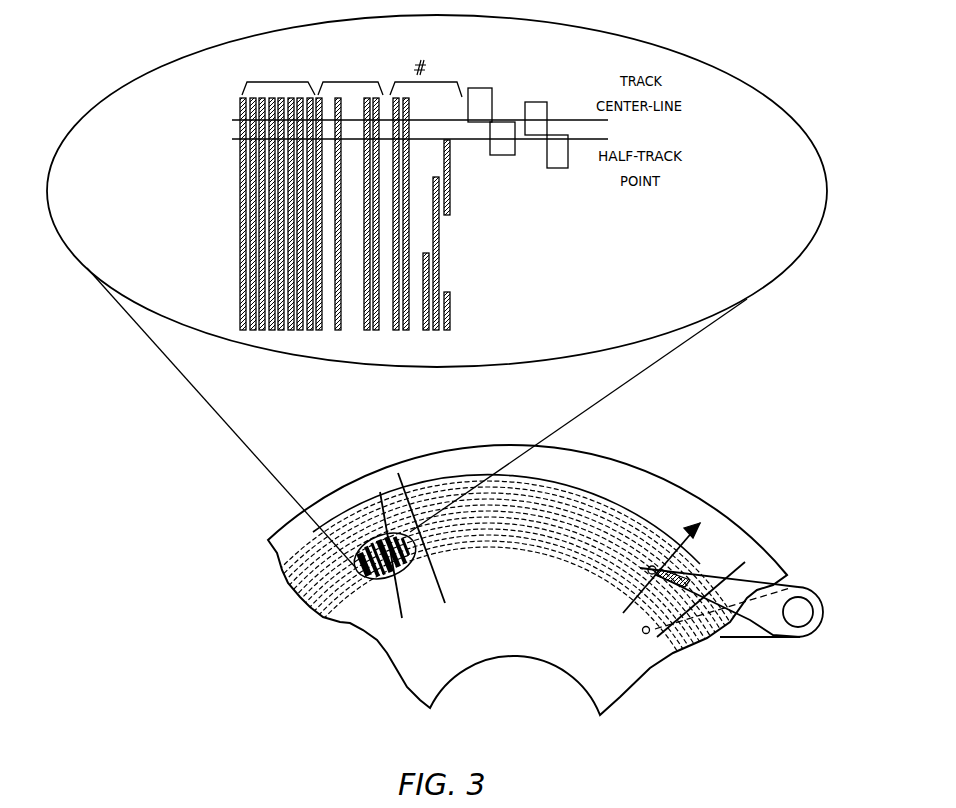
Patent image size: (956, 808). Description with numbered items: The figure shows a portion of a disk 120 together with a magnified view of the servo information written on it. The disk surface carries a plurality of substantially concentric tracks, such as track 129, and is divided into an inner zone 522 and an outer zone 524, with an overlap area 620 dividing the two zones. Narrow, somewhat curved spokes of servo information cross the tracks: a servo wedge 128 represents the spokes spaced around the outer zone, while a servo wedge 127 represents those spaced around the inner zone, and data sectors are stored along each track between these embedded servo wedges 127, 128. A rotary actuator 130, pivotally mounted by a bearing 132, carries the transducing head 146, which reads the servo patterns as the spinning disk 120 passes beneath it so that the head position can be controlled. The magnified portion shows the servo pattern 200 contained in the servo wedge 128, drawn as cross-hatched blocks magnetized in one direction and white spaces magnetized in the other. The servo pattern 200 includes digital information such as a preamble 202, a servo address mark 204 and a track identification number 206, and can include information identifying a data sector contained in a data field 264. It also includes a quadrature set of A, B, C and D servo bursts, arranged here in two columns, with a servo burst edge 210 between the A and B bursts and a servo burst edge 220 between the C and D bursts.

The servo pattern 200 is at (667, 50).
The preamble 202 is at (240, 93).
The servo address mark (SAM) 204 is at (365, 82).
The track identification number 206 is at (446, 82).
The servo burst edge 210 is at (492, 121).
The servo burst edge 220 is at (548, 136).
The disk 120 is at (272, 541).
The data field 264 is at (465, 478).
The servo wedge 128 is at (438, 582).
The track 129 is at (592, 498).
The transducing head 146 is at (652, 565).
The outer zone 524 is at (682, 496).
The servo wedge 127 is at (717, 537).
The bearing 132 is at (803, 596).
The rotary actuator 130 is at (742, 627).
The overlap area 620 is at (763, 637).
The inner zone 522 is at (617, 688).